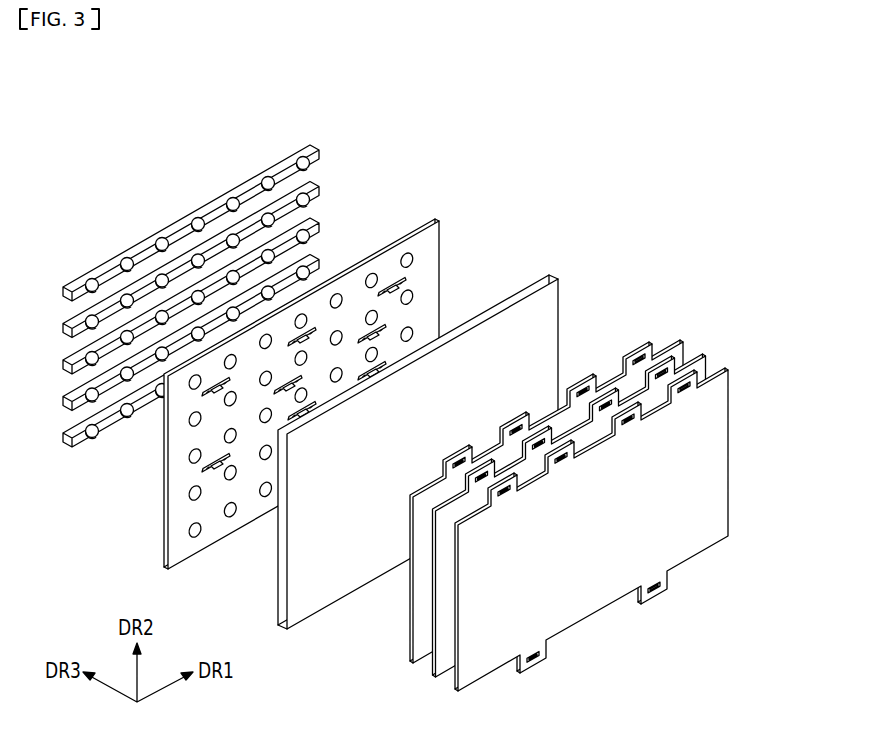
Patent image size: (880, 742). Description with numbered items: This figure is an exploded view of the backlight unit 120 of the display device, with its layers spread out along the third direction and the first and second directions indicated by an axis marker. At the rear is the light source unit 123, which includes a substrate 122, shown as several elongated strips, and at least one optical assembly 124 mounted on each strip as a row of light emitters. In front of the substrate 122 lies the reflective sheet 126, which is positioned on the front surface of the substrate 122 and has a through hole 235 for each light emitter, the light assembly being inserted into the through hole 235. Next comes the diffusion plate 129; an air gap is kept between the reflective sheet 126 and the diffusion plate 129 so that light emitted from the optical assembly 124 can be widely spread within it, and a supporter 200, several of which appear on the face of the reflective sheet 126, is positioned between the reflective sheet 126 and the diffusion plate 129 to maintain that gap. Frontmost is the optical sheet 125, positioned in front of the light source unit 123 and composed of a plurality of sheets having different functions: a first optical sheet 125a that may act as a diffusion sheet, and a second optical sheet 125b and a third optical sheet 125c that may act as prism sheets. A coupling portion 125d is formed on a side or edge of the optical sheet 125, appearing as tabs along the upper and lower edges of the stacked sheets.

The backlight unit 120 is at (128, 132).
The substrate 122 is at (321, 148).
The light source unit 123 is at (333, 264).
The optical assembly 124 is at (244, 298).
The optical sheet 125 is at (605, 473).
The first optical sheet 125a is at (726, 369).
The second optical sheet 125b is at (704, 358).
The third optical sheet 125c is at (679, 340).
The coupling portion 125d is at (639, 350).
The reflective sheet 126 is at (290, 366).
The diffusion plate 129 is at (559, 275).
The supporter 200 is at (204, 467).
The through hole 235 is at (192, 496).